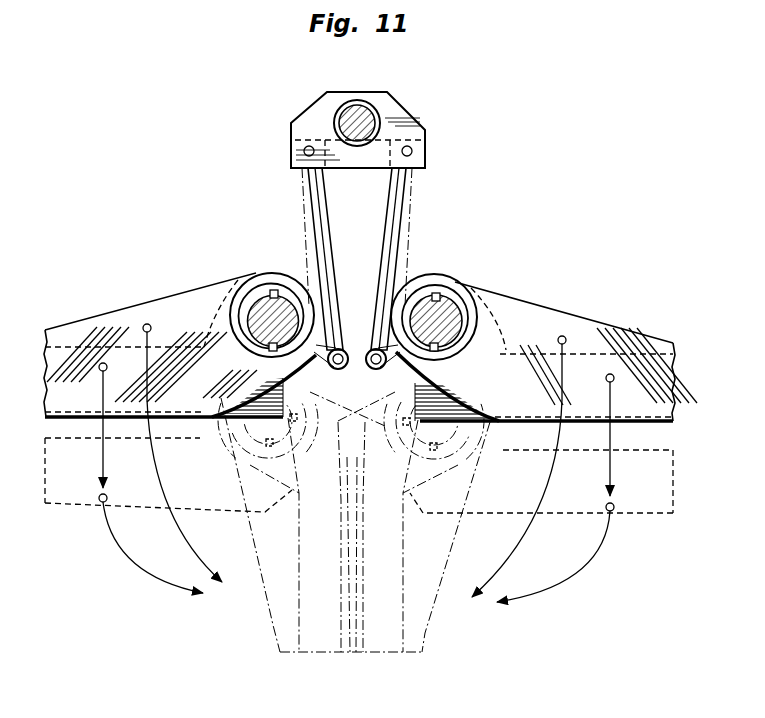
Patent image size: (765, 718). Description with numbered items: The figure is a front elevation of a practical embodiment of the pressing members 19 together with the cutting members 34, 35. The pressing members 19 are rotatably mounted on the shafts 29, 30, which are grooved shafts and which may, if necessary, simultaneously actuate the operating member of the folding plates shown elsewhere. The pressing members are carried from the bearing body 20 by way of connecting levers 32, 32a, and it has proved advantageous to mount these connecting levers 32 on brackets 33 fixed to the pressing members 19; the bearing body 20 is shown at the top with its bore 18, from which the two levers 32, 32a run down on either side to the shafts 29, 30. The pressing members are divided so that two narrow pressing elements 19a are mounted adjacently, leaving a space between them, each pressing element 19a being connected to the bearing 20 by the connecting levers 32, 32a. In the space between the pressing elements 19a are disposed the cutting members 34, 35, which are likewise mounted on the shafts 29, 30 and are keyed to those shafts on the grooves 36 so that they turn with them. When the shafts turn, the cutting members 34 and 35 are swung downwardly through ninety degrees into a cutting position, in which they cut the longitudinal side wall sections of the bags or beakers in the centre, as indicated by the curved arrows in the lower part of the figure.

The shaft / bore 18 is at (351, 113).
The bearing body 20 is at (408, 121).
The connecting lever 32 is at (310, 183).
The connecting lever 32a is at (400, 185).
The bracket 33 is at (375, 371).
The shaft 30 is at (268, 275).
The shaft 29 is at (441, 290).
The groove 36 is at (244, 350).
The pressing member 19 is at (190, 292).
The pressing element 19a is at (545, 317).
The cutting member 35 is at (127, 364).
The cutting member 34 is at (596, 372).